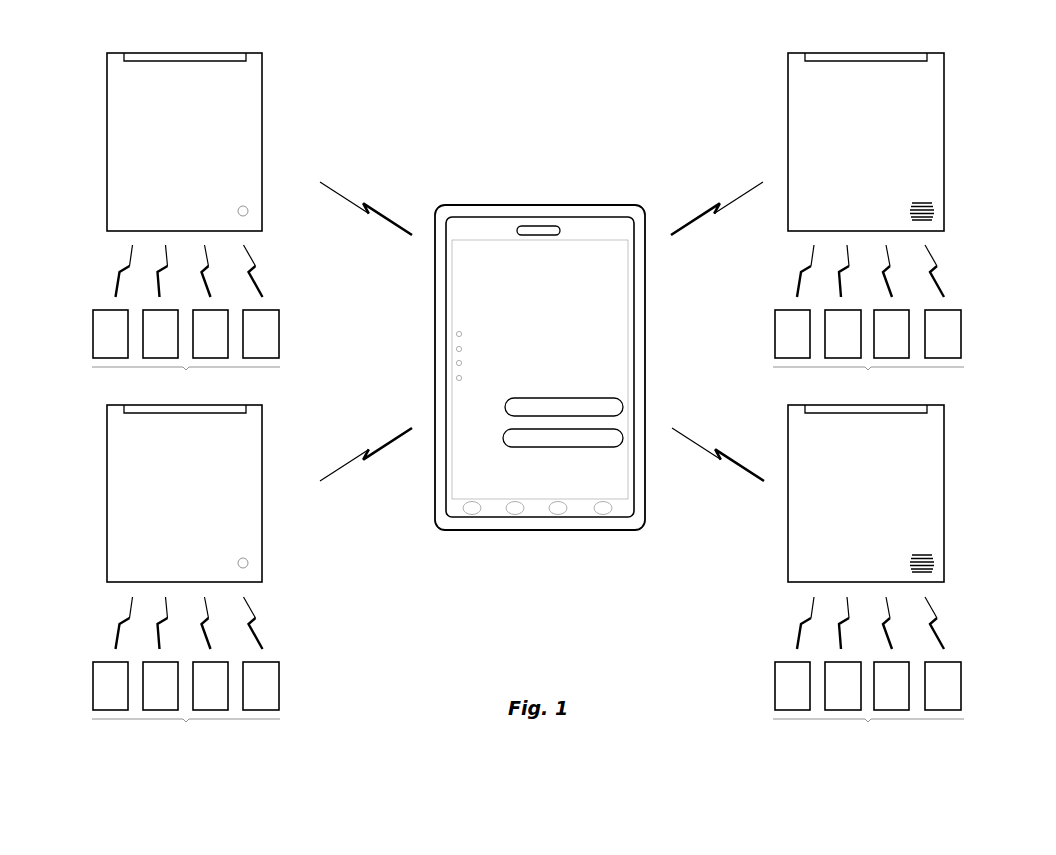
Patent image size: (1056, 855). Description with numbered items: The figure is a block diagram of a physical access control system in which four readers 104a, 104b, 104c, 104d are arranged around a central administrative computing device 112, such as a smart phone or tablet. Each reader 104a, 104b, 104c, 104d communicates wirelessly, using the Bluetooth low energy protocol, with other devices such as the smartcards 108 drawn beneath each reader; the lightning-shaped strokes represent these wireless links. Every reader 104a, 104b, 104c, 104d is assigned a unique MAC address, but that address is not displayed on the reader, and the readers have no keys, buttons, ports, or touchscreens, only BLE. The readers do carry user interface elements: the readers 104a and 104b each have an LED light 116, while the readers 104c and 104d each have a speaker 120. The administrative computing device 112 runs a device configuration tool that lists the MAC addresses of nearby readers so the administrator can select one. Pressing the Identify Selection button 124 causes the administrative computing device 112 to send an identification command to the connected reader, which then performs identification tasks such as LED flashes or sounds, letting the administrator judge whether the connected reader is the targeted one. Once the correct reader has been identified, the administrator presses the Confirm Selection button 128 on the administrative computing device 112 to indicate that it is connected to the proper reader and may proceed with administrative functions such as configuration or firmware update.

The physical access control system reader 104a is at (262, 75).
The physical access control system reader 104b is at (262, 427).
The physical access control system reader 104c is at (944, 74).
The physical access control system reader 104d is at (944, 426).
The smartcard 108 is at (528, 527).
The administrative computing device 112 is at (548, 205).
The LED light 116 is at (249, 214).
The speaker 120 is at (932, 220).
The Identify Selection button 124 is at (602, 399).
The Confirm Selection button 128 is at (600, 446).